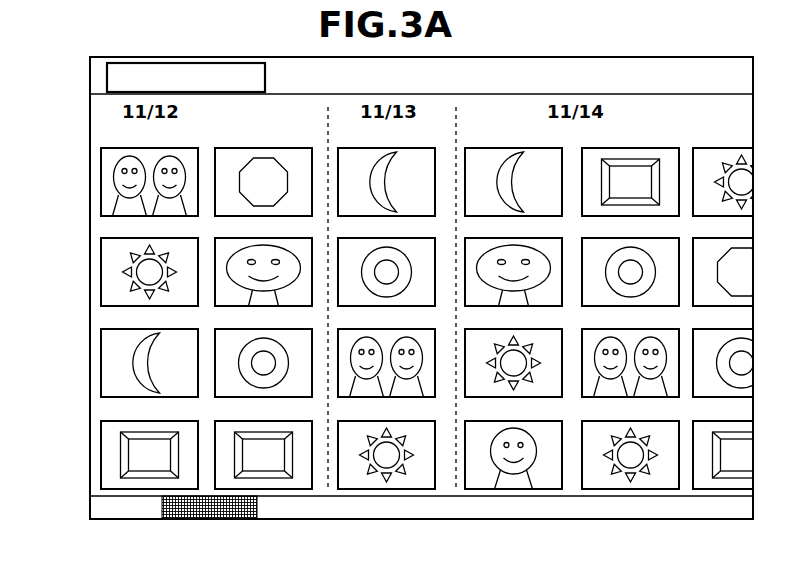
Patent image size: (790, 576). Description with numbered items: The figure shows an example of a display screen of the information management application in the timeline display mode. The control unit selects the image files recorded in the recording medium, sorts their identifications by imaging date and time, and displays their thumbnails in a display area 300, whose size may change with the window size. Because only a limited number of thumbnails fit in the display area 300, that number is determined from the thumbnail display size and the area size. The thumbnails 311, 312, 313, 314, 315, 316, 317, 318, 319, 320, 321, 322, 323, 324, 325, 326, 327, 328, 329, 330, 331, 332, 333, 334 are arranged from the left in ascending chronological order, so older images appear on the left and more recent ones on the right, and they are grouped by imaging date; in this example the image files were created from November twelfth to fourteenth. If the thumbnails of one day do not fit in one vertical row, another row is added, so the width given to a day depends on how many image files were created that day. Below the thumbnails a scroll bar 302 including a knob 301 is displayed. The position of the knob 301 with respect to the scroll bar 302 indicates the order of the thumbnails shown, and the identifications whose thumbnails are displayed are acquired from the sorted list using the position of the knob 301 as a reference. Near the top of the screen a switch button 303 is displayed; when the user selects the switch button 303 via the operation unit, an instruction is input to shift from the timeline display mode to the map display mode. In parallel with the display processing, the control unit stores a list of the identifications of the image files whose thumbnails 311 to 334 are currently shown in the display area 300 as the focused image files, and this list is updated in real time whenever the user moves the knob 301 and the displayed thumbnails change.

The display area 300 is at (90, 228).
The knob 301 is at (162, 508).
The scroll bar 302 is at (441, 520).
The switch button 303 is at (107, 76).
The thumbnail 311 is at (130, 148).
The thumbnail 312 is at (130, 238).
The thumbnail 313 is at (130, 329).
The thumbnail 314 is at (130, 421).
The thumbnail 315 is at (244, 148).
The thumbnail 316 is at (244, 238).
The thumbnail 317 is at (244, 329).
The thumbnail 318 is at (244, 421).
The thumbnail 319 is at (367, 148).
The thumbnail 320 is at (367, 238).
The thumbnail 321 is at (367, 329).
The thumbnail 322 is at (367, 421).
The thumbnail 323 is at (494, 148).
The thumbnail 324 is at (494, 238).
The thumbnail 325 is at (494, 329).
The thumbnail 326 is at (494, 421).
The thumbnail 327 is at (611, 148).
The thumbnail 328 is at (611, 238).
The thumbnail 329 is at (611, 329).
The thumbnail 330 is at (611, 421).
The thumbnail 331 is at (745, 148).
The thumbnail 332 is at (745, 238).
The thumbnail 333 is at (745, 329).
The thumbnail 334 is at (745, 421).